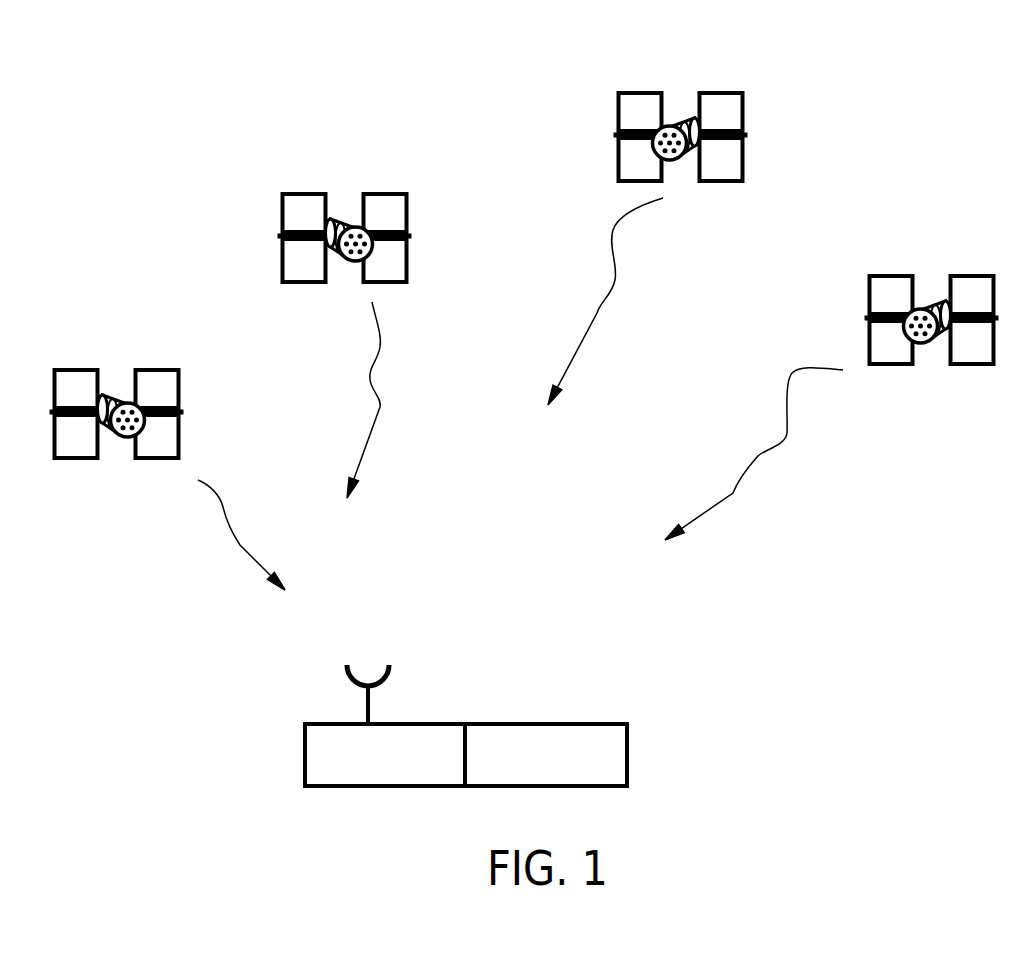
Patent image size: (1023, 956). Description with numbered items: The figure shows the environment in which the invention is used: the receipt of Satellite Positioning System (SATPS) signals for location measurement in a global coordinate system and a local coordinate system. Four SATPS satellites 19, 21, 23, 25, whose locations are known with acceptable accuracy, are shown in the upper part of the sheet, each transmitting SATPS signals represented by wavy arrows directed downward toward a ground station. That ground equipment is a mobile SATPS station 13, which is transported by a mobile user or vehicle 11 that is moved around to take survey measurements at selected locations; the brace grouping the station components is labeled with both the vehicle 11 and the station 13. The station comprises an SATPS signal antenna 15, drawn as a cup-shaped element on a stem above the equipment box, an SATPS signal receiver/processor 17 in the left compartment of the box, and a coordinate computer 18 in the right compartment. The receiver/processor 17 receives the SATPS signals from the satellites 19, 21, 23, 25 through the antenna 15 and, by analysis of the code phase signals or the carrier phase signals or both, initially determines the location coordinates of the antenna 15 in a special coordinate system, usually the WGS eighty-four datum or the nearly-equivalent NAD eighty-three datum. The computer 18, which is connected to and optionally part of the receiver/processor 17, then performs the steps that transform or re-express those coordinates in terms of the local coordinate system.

The mobile user or vehicle 11 is at (427, 720).
The mobile SATPS station 13 is at (268, 658).
The SATPS signal antenna 15 is at (370, 704).
The SATPS signal receiver/processor 17 is at (418, 730).
The coordinate computer 18 is at (550, 740).
The satellite 19 is at (125, 402).
The satellite 21 is at (352, 226).
The satellite 23 is at (678, 127).
The satellite 25 is at (928, 302).